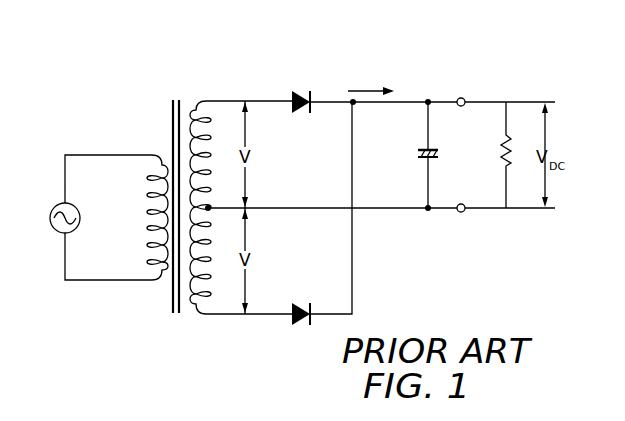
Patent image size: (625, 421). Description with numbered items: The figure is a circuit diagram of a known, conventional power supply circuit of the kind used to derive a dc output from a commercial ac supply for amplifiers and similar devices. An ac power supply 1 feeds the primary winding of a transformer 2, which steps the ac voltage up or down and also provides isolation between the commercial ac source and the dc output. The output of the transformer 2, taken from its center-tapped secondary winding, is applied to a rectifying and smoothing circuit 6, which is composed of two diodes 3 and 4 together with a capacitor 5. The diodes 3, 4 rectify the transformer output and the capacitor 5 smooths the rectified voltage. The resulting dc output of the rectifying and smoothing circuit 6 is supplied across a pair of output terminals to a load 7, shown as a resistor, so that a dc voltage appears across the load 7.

The ac power supply 1 is at (50, 218).
The transformer 2 is at (160, 91).
The diode 3 is at (302, 90).
The diode 4 is at (300, 302).
The capacitor 5 is at (418, 152).
The rectifying and smoothing circuit 6 is at (452, 47).
The load 7 is at (502, 149).